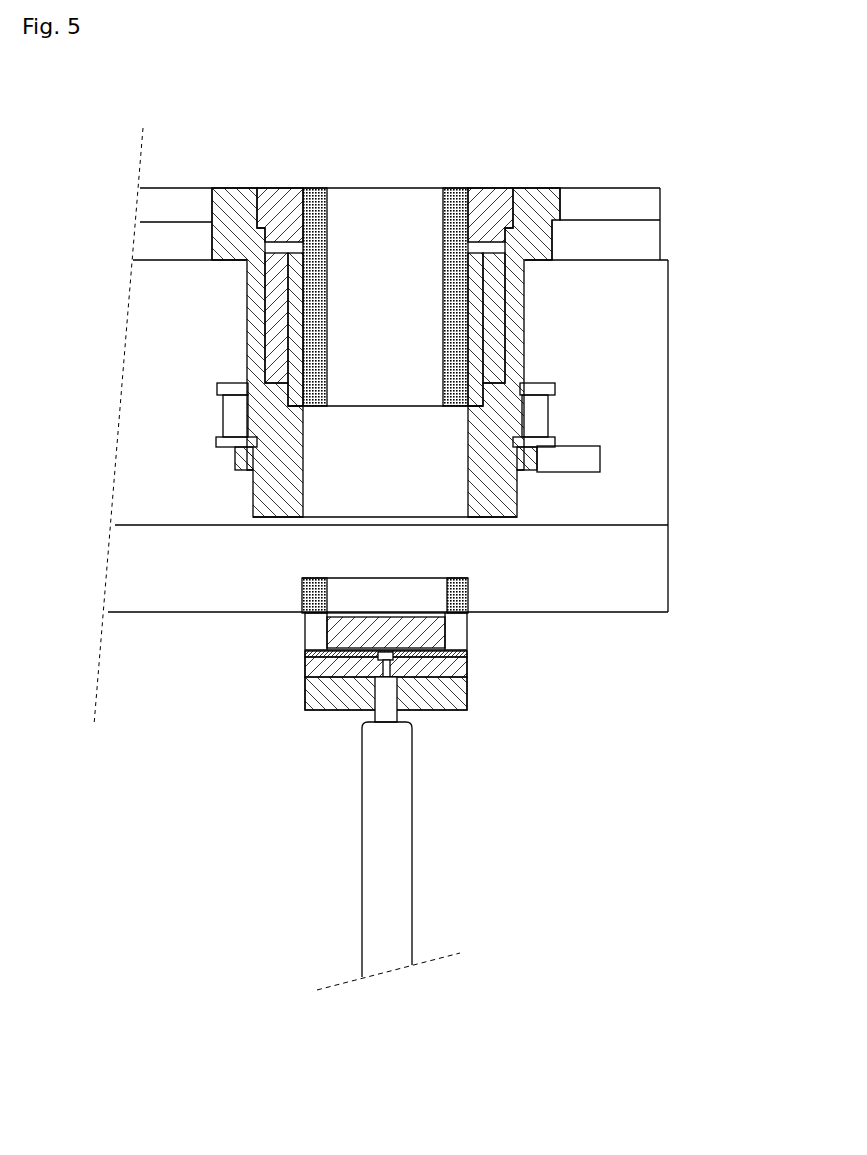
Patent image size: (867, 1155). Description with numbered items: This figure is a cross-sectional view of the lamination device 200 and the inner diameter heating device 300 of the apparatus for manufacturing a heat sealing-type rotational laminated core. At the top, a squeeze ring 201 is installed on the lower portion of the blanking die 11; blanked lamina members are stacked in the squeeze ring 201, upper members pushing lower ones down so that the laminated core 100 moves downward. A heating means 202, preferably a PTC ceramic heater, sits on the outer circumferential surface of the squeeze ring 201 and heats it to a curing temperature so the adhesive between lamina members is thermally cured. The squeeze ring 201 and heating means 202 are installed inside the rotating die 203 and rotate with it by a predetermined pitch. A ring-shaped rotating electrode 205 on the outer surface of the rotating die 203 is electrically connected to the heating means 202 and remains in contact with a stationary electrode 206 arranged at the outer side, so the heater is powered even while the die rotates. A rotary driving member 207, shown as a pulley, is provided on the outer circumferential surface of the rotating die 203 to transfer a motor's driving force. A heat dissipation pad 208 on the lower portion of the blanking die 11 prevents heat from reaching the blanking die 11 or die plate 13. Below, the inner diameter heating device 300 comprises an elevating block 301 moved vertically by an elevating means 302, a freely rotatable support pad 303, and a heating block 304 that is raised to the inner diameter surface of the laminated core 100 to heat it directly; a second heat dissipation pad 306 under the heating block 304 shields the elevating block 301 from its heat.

The lamination device 200 is at (226, 150).
The blanking die 11 is at (275, 188).
The die plate 13 is at (648, 206).
The heat dissipation pad 208 is at (315, 190).
The rotating die 203 is at (538, 192).
The squeeze ring 201 is at (300, 313).
The heating means 202 is at (278, 363).
The rotating electrode 205 is at (235, 449).
The rotary driving member 207 is at (541, 420).
The stationary electrode 206 is at (594, 460).
The laminated core 100 is at (468, 590).
The inner diameter heating device 300 is at (286, 722).
The heating block 304 is at (445, 637).
The support pad 303 is at (467, 665).
The heat dissipation pad 306 is at (330, 648).
The elevating block 301 is at (455, 695).
The elevating means 302 is at (412, 740).